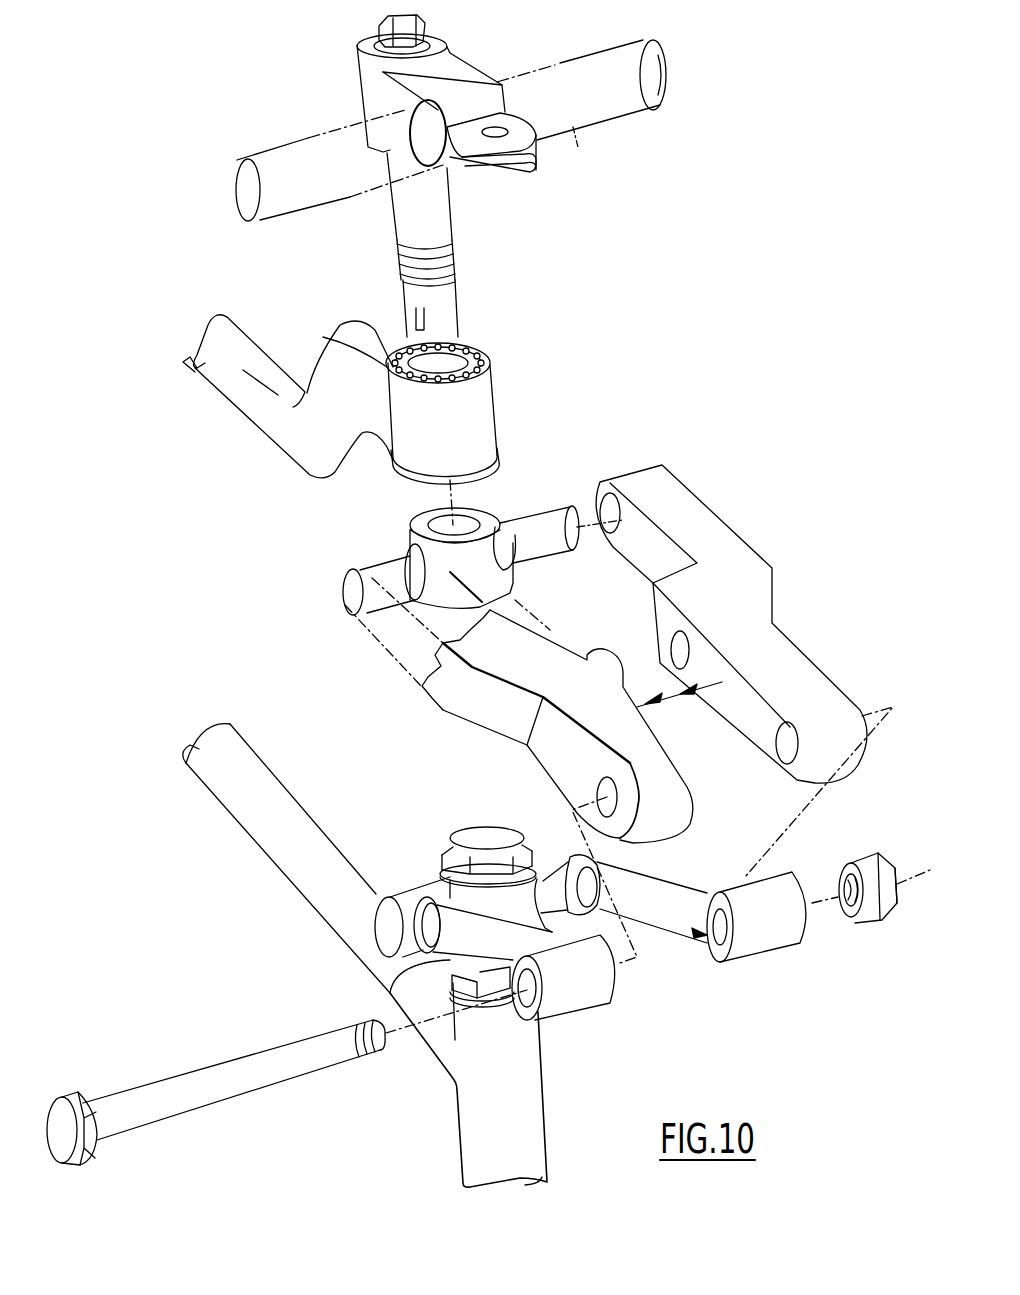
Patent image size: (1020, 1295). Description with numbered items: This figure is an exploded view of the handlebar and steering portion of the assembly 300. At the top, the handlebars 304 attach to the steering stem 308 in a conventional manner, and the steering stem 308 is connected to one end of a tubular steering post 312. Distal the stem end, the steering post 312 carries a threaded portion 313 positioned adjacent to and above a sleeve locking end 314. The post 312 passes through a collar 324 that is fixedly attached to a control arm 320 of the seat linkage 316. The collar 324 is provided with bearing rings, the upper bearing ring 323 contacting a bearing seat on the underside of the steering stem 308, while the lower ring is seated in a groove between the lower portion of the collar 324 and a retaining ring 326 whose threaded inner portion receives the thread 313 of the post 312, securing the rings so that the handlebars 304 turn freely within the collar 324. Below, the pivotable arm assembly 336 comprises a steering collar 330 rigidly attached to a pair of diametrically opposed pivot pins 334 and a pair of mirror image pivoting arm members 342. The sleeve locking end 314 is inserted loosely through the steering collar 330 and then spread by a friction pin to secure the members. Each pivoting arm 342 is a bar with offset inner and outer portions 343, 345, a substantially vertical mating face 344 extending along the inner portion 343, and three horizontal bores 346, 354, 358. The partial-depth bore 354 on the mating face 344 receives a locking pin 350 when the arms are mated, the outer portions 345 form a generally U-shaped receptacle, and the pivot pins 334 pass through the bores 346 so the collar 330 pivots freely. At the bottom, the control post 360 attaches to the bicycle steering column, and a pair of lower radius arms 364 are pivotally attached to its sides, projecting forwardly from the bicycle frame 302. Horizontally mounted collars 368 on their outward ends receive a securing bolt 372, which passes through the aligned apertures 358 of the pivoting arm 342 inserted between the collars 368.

The assembly 300 is at (718, 231).
The bicycle frame 302 is at (267, 841).
The handlebars 304 is at (578, 147).
The steering stem 308 is at (473, 83).
The steering post 312 is at (450, 228).
The threaded portion 313 is at (450, 257).
The sleeve locking end 314 is at (455, 320).
The seat linkage 316 is at (277, 448).
The control arm 320 is at (240, 403).
The upper bearing ring 323 is at (470, 364).
The collar 324 is at (480, 405).
The retaining ring 326 is at (480, 457).
The steering collar 330 is at (415, 527).
The pivot pins 334 is at (532, 520).
The pivotable arm assembly 336 is at (740, 489).
The pivoting arm members 342 is at (742, 563).
The inner portion 343 is at (823, 705).
The mating face 344 is at (652, 743).
The outer portion 345 is at (365, 552).
The bore 346 is at (600, 533).
The locking pin 350 is at (600, 663).
The bore 354 is at (670, 650).
The bore 358 is at (793, 740).
The control post 360 is at (480, 888).
The lower radius arms 364 is at (685, 897).
The collars 368 is at (733, 963).
The securing bolt 372 is at (317, 1062).